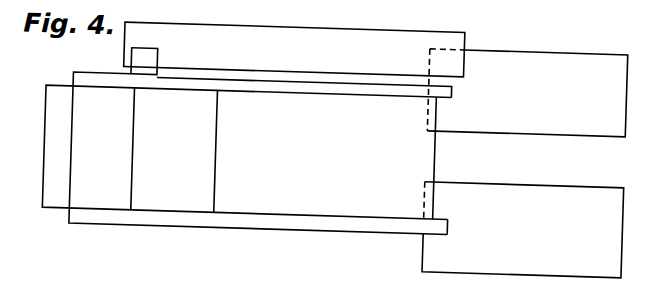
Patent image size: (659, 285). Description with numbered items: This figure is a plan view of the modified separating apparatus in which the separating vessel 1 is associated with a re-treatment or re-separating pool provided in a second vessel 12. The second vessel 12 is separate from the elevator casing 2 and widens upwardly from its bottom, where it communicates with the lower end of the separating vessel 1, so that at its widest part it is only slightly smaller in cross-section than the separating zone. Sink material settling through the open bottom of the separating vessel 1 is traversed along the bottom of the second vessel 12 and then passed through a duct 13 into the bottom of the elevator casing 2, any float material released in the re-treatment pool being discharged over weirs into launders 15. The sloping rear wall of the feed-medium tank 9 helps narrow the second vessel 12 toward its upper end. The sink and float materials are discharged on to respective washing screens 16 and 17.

The separating vessel 1 is at (349, 190).
The elevator casing 2 is at (324, 22).
The feed-medium tank 9 is at (172, 191).
The second vessel 12 is at (48, 132).
The duct 13 is at (131, 57).
The launders 15 is at (236, 77).
The washing screen 16 is at (527, 93).
The washing screen 17 is at (523, 230).